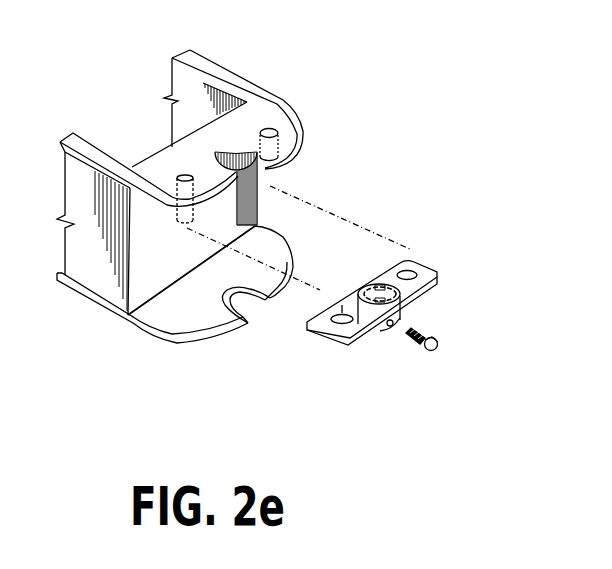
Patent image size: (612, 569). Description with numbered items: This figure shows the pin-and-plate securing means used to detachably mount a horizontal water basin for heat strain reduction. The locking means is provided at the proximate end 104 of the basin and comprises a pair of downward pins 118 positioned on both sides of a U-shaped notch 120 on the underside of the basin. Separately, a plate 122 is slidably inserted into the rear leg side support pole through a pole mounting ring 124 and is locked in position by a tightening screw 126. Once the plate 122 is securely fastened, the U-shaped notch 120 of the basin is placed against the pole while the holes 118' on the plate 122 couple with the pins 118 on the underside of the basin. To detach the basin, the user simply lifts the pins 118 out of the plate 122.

The support plate 104 is at (283, 103).
The pin hole 118 is at (337, 140).
The pin hole 118' is at (448, 233).
The pivot post 120 is at (265, 163).
The mounting plate 122 is at (433, 265).
The bushing 124 is at (401, 317).
The screw 126 is at (424, 348).